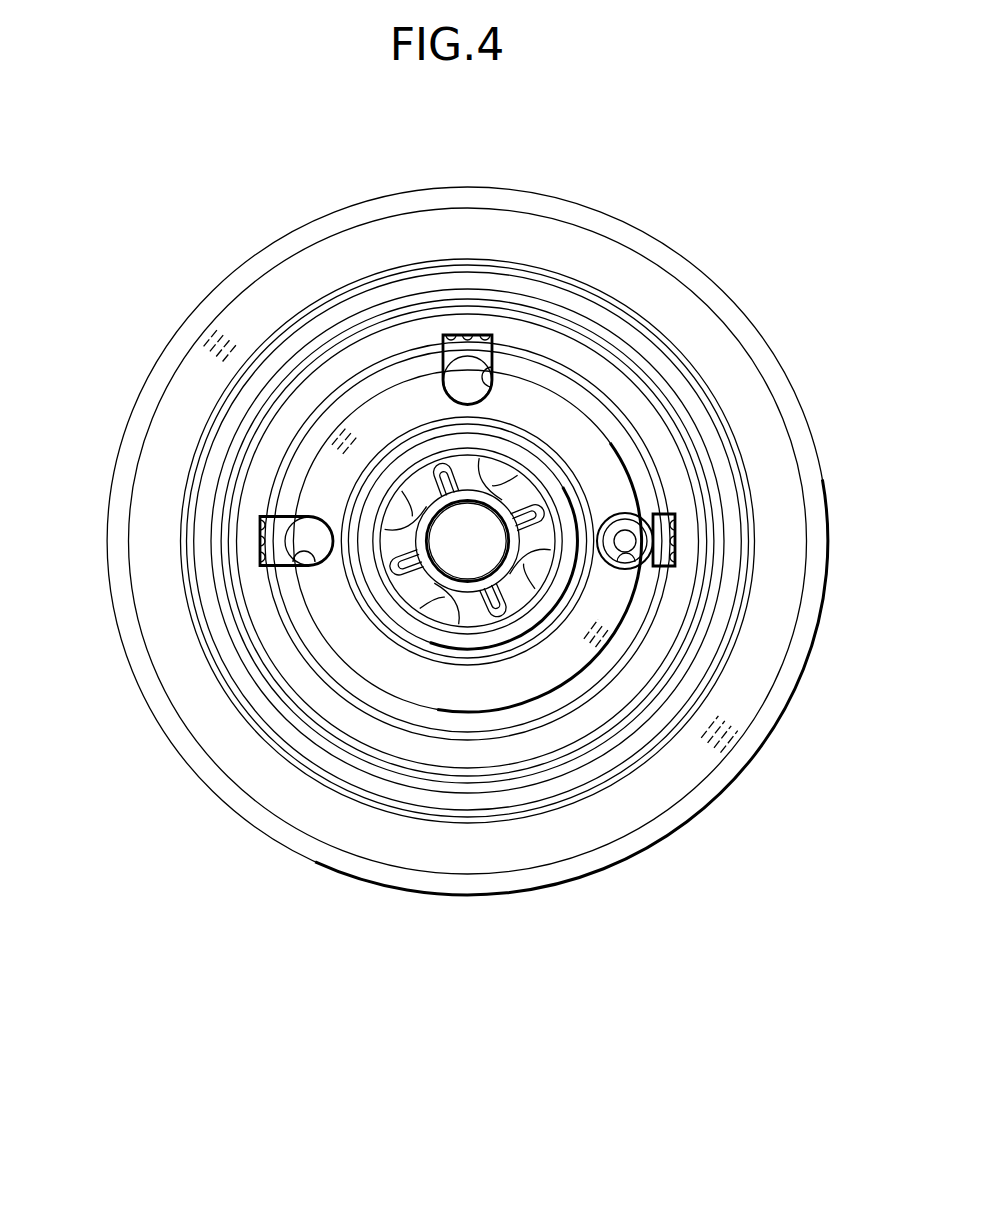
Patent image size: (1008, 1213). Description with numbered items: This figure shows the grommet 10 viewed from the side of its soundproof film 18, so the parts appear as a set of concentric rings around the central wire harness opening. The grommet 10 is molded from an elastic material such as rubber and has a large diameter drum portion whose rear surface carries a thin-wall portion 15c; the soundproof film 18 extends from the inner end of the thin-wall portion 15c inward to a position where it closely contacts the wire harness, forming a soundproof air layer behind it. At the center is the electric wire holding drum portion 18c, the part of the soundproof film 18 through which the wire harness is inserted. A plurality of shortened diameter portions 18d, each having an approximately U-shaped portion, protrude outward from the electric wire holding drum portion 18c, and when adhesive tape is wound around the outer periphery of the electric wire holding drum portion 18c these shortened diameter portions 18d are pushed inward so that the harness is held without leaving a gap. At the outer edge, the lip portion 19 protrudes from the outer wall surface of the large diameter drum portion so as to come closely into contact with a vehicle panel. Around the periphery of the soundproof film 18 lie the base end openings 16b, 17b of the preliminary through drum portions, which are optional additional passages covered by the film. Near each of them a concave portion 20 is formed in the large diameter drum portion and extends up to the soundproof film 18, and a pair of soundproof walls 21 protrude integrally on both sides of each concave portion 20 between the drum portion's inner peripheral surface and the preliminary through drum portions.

The grommet 10 is at (463, 920).
The thin-wall portion 15c is at (320, 378).
The base end opening of preliminary through drum portion 16b is at (640, 567).
The base end opening of preliminary through drum portion 17b is at (490, 368).
The soundproof film 18 is at (523, 680).
The electric wire holding drum portion 18c is at (444, 582).
The shortened diameter portion 18d is at (528, 500).
The lip portion 19 is at (690, 822).
The concave portion 20 is at (468, 333).
The soundproof wall 21 is at (451, 333).